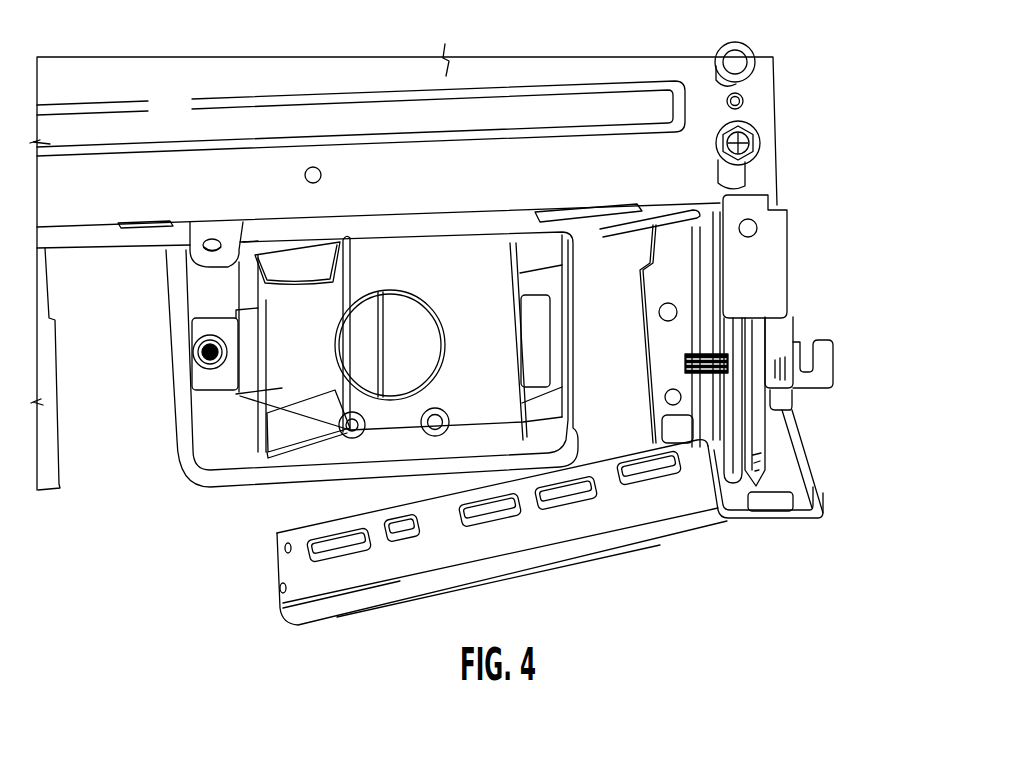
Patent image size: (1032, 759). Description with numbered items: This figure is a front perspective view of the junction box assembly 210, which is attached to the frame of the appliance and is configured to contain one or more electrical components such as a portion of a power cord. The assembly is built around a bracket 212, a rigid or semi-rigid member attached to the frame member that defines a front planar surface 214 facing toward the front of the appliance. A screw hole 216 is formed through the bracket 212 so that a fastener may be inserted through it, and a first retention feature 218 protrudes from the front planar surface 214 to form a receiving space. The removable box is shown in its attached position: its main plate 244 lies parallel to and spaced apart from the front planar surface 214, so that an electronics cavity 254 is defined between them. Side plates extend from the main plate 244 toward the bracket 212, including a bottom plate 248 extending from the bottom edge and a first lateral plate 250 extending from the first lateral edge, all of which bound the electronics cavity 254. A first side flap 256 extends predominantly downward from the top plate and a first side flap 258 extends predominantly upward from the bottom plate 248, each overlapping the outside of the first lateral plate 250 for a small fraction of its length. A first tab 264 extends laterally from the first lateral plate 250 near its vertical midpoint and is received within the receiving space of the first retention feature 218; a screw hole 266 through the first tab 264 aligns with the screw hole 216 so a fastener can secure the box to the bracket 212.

The junction box assembly 210 is at (258, 198).
The bracket 212 is at (176, 450).
The front planar surface 214 is at (205, 441).
The screw hole 216 is at (209, 342).
The first retention feature 218 is at (232, 278).
The main plate 244 is at (499, 326).
The bottom plate 248 is at (437, 446).
The first lateral plate 250 is at (282, 388).
The electronics cavity 254 is at (424, 298).
The first side flap 256 is at (307, 263).
The first side flap 258 is at (297, 431).
The first tab 264 is at (195, 373).
The screw hole 266 is at (197, 346).